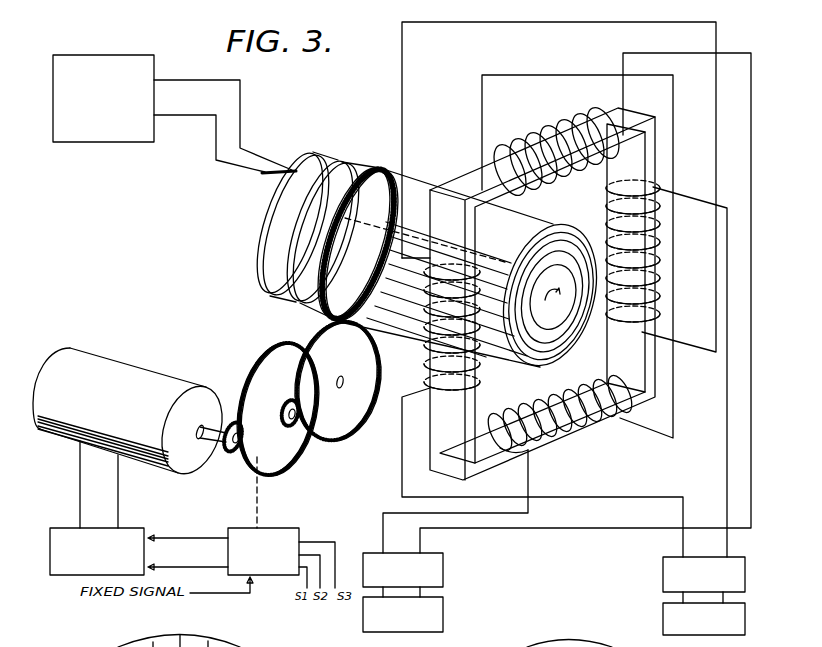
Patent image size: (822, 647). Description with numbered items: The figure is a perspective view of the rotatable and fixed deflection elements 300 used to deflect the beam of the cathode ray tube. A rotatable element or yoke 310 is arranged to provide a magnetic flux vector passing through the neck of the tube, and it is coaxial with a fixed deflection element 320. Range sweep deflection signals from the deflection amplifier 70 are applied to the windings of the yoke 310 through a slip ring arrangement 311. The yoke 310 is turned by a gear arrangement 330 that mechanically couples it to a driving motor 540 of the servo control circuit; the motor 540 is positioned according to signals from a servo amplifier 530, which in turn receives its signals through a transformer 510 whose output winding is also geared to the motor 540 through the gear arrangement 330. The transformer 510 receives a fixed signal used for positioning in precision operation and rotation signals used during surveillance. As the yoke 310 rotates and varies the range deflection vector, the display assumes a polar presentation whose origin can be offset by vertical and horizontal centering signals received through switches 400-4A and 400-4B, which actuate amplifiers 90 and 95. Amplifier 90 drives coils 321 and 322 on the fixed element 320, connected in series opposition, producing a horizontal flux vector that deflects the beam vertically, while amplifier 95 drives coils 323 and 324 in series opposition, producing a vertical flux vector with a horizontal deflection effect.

The deflection amplifier 70 is at (98, 55).
The rotatable and fixed deflection elements 300 is at (414, 251).
The rotatable element 310 is at (429, 203).
The slip ring arrangement 311 is at (297, 235).
The fixed deflection element 320 is at (611, 107).
The coil 321 is at (565, 441).
The coil 322 is at (527, 141).
The coil 323 is at (425, 342).
The coil 324 is at (662, 248).
The gear arrangement 330 is at (272, 341).
The driving motor 540 is at (143, 363).
The servo amplifier 530 is at (144, 549).
The transformer 510 is at (270, 528).
The vertical amplifier 90 is at (443, 568).
The horizontal amplifier 95 is at (663, 569).
The switch 400-4A is at (443, 608).
The switch 400-4B is at (663, 612).